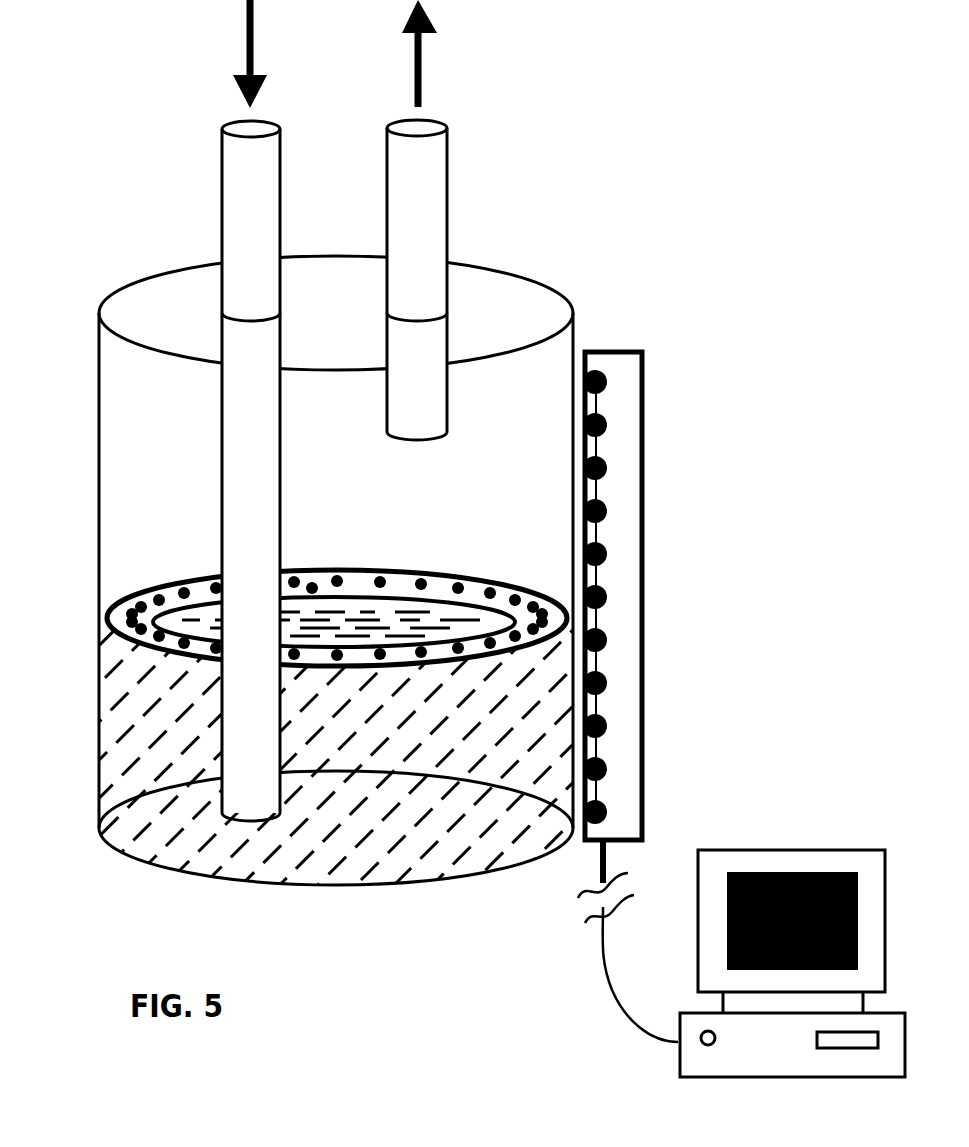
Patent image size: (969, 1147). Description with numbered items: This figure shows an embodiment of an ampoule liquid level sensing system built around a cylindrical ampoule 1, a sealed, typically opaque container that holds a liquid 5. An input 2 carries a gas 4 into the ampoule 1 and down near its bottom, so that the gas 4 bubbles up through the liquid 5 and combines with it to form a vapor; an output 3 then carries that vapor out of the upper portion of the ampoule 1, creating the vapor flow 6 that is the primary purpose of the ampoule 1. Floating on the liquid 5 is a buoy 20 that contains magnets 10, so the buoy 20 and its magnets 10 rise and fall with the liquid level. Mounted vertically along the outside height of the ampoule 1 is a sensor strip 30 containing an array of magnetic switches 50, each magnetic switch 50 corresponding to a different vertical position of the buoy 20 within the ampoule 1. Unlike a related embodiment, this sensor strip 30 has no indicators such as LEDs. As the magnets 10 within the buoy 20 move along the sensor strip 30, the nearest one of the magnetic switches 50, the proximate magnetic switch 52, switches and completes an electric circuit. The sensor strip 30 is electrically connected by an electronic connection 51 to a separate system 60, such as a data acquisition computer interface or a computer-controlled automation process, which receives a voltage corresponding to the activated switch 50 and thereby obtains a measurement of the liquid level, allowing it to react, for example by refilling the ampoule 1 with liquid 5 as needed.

The ampoule 1 is at (503, 273).
The input 2 is at (248, 200).
The output 3 is at (415, 200).
The gas 4 is at (260, 52).
The liquid 5 is at (142, 772).
The vapor flow 6 is at (427, 53).
The magnets 10 is at (318, 574).
The buoy 20 is at (420, 570).
The sensor strip 30 is at (645, 363).
The magnetic switches 50 is at (613, 465).
The electronic connection 51 is at (600, 952).
The proximate magnetic switch 52 is at (611, 622).
The separate system 60 is at (782, 847).